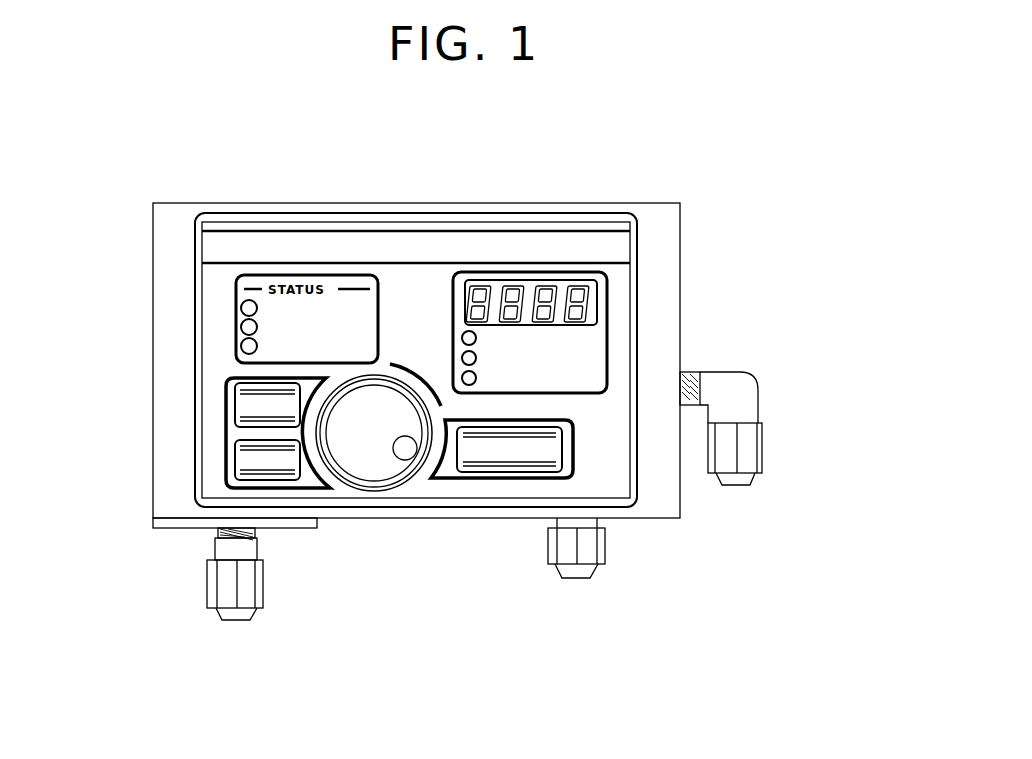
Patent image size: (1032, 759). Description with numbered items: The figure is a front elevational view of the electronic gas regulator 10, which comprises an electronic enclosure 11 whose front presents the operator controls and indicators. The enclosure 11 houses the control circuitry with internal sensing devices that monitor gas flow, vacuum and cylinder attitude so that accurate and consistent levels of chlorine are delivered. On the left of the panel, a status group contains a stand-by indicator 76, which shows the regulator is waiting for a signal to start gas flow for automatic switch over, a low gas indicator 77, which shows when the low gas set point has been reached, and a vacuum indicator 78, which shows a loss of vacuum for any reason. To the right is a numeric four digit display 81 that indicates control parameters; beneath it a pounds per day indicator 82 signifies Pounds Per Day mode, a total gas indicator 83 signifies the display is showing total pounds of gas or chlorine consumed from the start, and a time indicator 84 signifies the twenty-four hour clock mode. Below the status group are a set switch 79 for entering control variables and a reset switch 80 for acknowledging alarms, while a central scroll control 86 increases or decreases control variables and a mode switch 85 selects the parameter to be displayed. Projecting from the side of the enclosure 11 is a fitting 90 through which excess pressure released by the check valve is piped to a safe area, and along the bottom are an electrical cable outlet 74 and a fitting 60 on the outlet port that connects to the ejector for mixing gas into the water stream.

The electronic gas regulator 10 is at (690, 202).
The electronic enclosure 11 is at (633, 203).
The fitting 60 is at (208, 577).
The electrical cable outlet 74 is at (605, 564).
The stand-by indicator 76 is at (241, 308).
The low gas indicator 77 is at (241, 327).
The vacuum indicator 78 is at (241, 346).
The set switch 79 is at (226, 405).
The reset switch 80 is at (226, 460).
The numeric four digit display 81 is at (600, 300).
The pounds per day indicator 82 is at (592, 341).
The total gas indicator 83 is at (605, 360).
The time indicator 84 is at (540, 380).
The mode switch 85 is at (566, 450).
The scroll control 86 is at (375, 492).
The fitting 90 is at (760, 393).